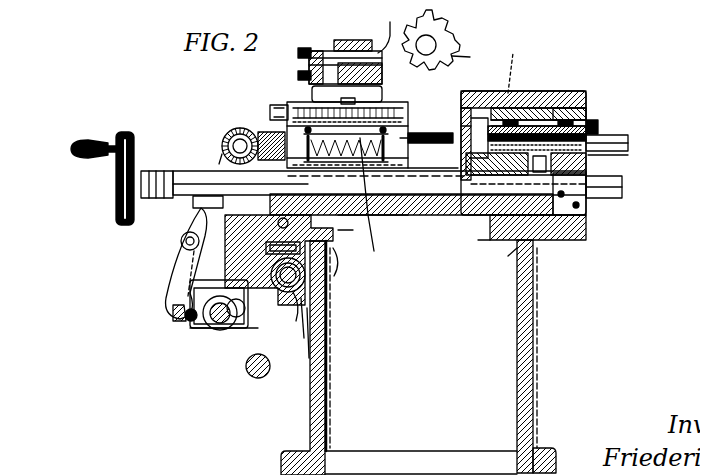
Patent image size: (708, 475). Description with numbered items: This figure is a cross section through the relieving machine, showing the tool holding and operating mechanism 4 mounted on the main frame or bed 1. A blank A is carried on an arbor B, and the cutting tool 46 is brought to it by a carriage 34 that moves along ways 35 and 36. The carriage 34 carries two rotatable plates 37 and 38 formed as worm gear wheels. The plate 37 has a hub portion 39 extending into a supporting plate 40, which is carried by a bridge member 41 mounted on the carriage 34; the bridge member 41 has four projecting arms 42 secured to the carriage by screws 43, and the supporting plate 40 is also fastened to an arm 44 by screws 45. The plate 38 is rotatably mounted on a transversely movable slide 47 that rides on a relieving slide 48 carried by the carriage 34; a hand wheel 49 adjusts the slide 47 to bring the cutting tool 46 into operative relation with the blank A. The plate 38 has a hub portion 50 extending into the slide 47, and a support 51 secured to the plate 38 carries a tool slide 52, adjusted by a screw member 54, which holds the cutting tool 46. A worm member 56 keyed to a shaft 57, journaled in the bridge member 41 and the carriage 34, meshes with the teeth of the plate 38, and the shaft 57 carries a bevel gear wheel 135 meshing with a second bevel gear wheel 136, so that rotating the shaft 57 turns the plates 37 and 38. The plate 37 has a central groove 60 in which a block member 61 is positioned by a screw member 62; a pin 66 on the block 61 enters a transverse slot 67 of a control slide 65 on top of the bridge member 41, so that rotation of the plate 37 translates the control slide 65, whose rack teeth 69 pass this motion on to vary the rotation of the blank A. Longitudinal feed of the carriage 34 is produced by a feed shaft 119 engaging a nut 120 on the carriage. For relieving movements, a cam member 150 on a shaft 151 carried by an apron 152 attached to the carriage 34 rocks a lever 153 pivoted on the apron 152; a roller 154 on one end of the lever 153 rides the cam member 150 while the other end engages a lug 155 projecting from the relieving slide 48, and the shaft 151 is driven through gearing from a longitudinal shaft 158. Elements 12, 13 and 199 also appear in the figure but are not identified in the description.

The main frame or bed 1 is at (525, 375).
The tool holding and operating mechanism 4 is at (318, 27).
The frame bed 12 is at (340, 222).
The frame bracket 13 is at (478, 232).
The carriage 34 is at (372, 207).
The way 35 is at (339, 267).
The way 36 is at (500, 248).
The rotatable plate 37 is at (620, 130).
The rotatable plate 38 is at (398, 128).
The hub portion 39 is at (620, 147).
The supporting plate 40 is at (580, 163).
The bridge member 41 is at (478, 96).
The projecting arms 42 is at (614, 182).
The screws 43 is at (571, 197).
The arm 44 is at (452, 116).
The screws 45 is at (445, 162).
The cutting tool 46 is at (382, 14).
The transversely movable slide 47 is at (410, 140).
The relieving slide 48 is at (192, 150).
The hand wheel 49 is at (126, 130).
The hub portion 50 is at (305, 165).
The support 51 is at (396, 112).
The tool slide 52 is at (304, 86).
The screw member 54 is at (383, 98).
The worm member 56 is at (379, 200).
The shaft 57 is at (246, 118).
The groove 60 is at (578, 100).
The block member 61 is at (548, 98).
The screw member 62 is at (590, 112).
The control slide 65 is at (500, 100).
The pin 66 is at (520, 112).
The transverse slot 67 is at (556, 96).
The rack teeth 69 is at (517, 58).
The feed shaft 119 is at (292, 339).
The nut 120 is at (286, 323).
The bevel gear wheel 135 is at (262, 104).
The second bevel gear wheel 136 is at (214, 128).
The cam member 150 is at (210, 322).
The shaft 151 is at (188, 324).
The apron 152 is at (288, 313).
The lever 153 is at (165, 260).
The roller 154 is at (176, 318).
The lug 155 is at (184, 195).
The longitudinal shaft 158 is at (247, 370).
The gear 199 is at (548, 1).
The blank A is at (445, 24).
The arbor B is at (466, 50).